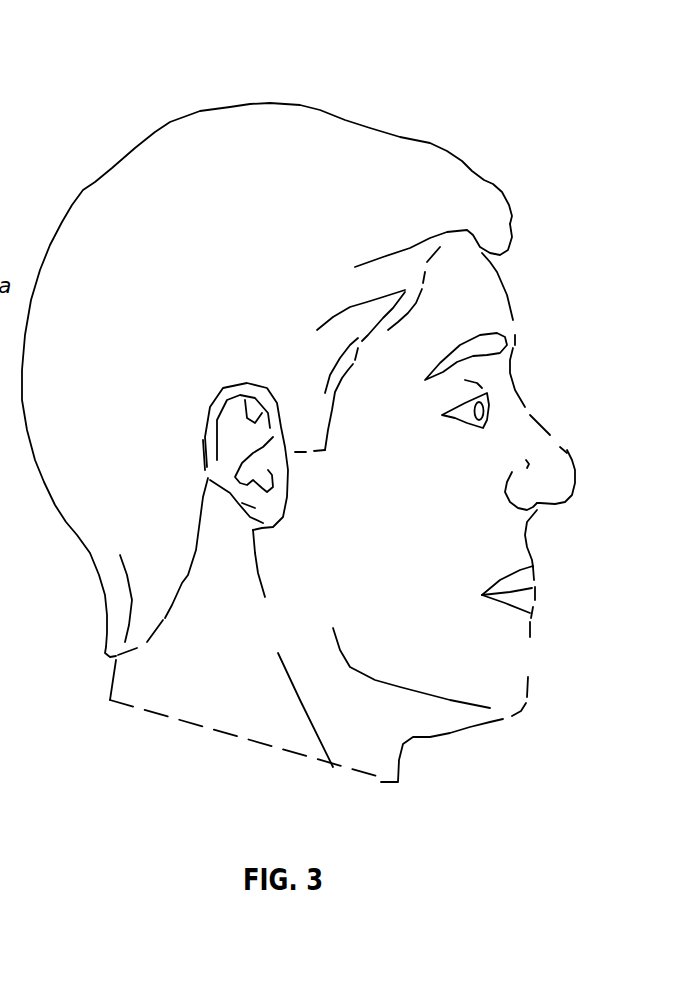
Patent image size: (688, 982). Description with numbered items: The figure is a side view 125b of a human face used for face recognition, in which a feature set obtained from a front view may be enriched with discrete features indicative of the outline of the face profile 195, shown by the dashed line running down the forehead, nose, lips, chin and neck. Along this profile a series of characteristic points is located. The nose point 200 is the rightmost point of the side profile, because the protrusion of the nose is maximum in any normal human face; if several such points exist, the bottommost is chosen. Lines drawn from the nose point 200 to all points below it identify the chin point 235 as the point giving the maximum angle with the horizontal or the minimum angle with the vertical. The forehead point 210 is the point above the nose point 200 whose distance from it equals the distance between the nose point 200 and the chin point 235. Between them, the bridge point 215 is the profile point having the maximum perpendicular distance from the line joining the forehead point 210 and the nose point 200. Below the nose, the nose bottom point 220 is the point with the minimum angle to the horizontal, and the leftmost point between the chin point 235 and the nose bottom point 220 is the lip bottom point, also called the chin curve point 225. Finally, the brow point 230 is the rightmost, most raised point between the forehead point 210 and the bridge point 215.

The side view 125b is at (100, 125).
The face profile 195 is at (192, 680).
The nose point 200 is at (583, 461).
The forehead point 210 is at (543, 281).
The bridge point 215 is at (563, 375).
The nose bottom point 220 is at (587, 561).
The chin curve point 225 is at (559, 636).
The brow point 230 is at (570, 315).
The chin point 235 is at (497, 702).